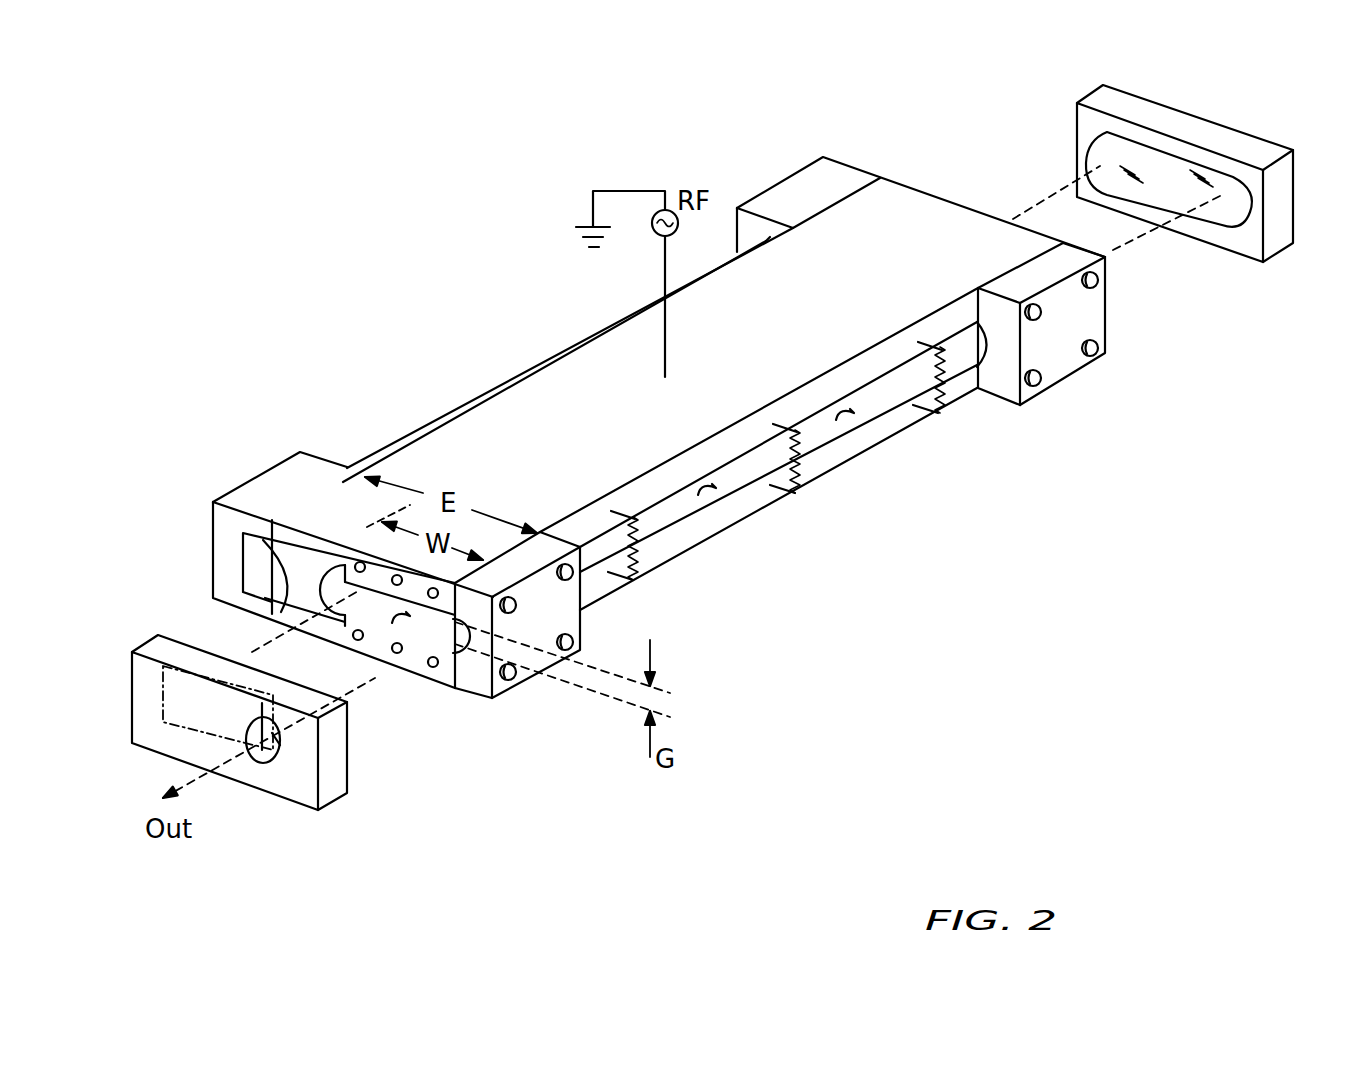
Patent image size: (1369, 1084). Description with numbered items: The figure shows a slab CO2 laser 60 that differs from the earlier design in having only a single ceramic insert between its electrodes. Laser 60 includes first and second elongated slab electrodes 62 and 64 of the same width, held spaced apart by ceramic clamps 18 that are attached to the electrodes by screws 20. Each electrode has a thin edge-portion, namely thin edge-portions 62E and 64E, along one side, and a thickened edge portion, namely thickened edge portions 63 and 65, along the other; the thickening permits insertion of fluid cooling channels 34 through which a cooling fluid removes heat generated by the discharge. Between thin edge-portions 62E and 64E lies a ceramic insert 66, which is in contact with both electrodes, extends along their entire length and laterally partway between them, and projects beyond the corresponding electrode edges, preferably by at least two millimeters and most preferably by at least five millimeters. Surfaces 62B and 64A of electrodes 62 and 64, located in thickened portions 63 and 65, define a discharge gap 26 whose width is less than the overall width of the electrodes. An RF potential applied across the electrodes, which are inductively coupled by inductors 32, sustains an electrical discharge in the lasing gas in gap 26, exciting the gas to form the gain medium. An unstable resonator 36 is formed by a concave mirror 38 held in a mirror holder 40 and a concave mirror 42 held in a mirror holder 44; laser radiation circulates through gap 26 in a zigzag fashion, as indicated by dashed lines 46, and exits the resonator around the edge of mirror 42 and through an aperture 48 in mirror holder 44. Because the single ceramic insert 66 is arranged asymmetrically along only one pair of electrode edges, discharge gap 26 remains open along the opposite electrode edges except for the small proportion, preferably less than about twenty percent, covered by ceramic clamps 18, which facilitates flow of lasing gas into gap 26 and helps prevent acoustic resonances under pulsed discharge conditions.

The ceramic clamps 18 is at (290, 467).
The screws 20 is at (527, 678).
The discharge gap 26 is at (840, 420).
The inductors 32 is at (942, 380).
The fluid cooling channels 34 is at (360, 561).
The unstable resonator 36 is at (332, 679).
The concave mirror 38 is at (1253, 212).
The mirror holder 40 is at (1247, 250).
The concave mirror 42 is at (152, 690).
The mirror holder 44 is at (145, 740).
The dashed lines 46 is at (265, 641).
The aperture 48 is at (270, 763).
The slab CO2 laser 60 is at (1040, 650).
The first elongated slab electrode 62 is at (460, 413).
The surface of electrode 62B is at (367, 597).
The thin edge-portion 62E is at (313, 542).
The thickened edge portion 63 is at (433, 667).
The second elongated slab electrode 64 is at (680, 547).
The surface of electrode 64A is at (357, 598).
The thin edge-portion 64E is at (283, 610).
The thickened edge portion 65 is at (418, 646).
The ceramic insert 66 is at (553, 352).